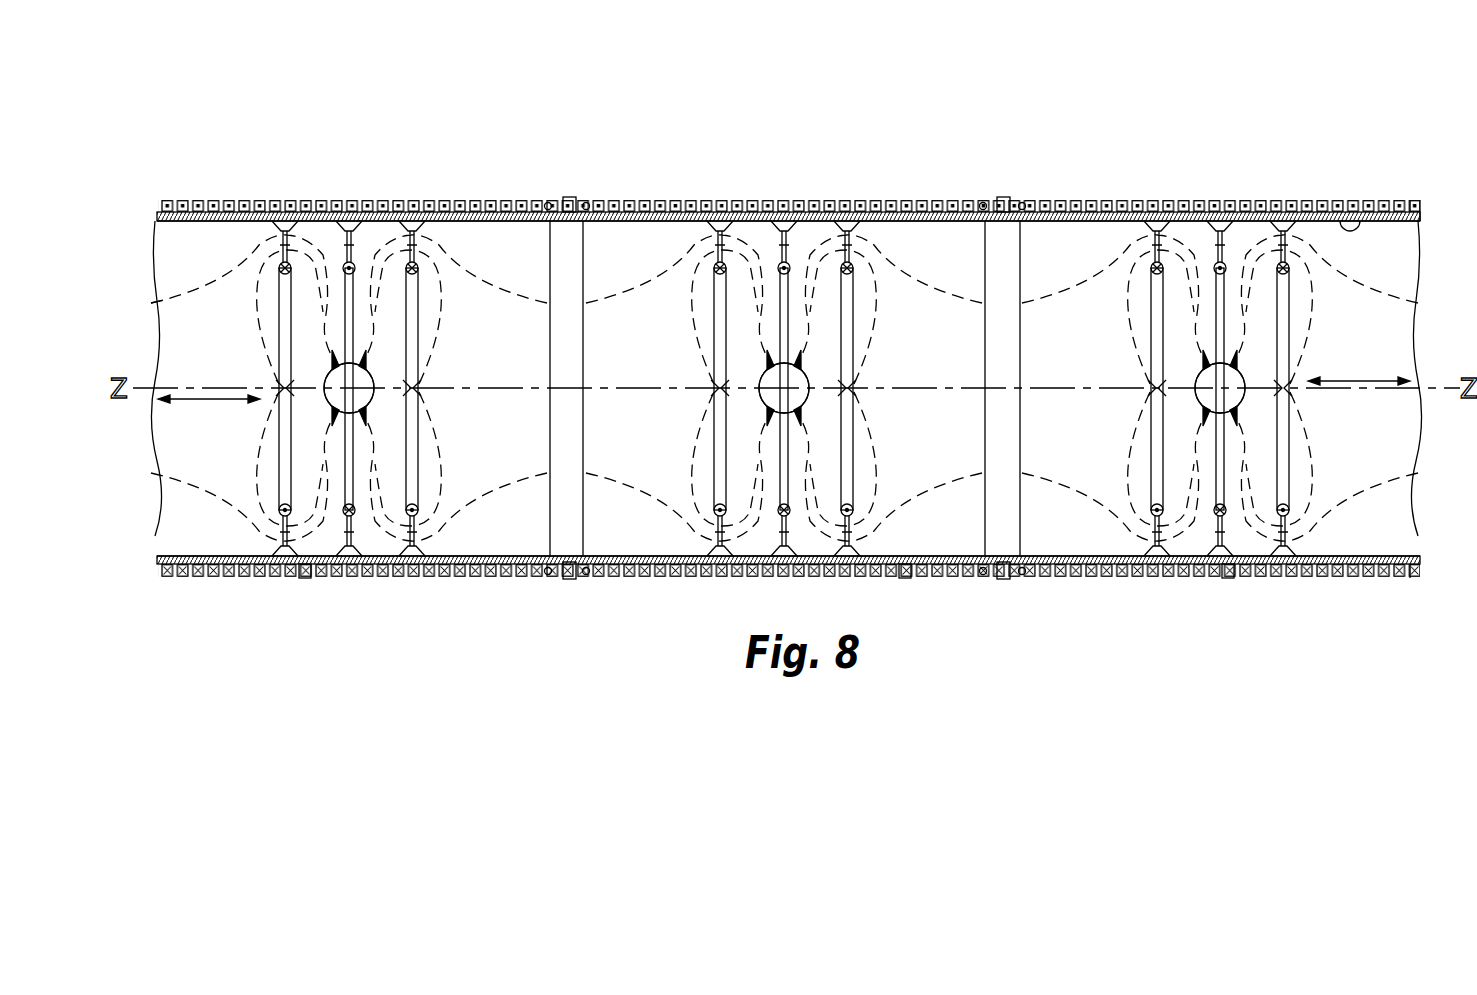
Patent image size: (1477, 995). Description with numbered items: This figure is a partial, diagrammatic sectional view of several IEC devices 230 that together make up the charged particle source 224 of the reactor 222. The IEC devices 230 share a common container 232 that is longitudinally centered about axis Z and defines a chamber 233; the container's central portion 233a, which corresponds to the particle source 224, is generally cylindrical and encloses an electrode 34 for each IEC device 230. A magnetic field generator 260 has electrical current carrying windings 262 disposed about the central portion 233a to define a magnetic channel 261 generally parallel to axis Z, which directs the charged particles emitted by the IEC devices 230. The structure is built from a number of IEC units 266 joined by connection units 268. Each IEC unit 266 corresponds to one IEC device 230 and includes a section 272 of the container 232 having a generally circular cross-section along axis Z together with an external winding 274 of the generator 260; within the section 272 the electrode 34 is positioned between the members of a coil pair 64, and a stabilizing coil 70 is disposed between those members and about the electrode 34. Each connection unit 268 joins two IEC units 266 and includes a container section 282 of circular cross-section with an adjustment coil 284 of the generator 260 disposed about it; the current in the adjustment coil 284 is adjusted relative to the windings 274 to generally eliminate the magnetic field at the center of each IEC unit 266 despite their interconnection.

The charged particle source 224 is at (1165, 90).
The external winding 274 is at (285, 199).
The electrical current carrying winding 262 is at (1157, 198).
The coil pair 64 is at (432, 468).
The electrode 34 is at (373, 408).
The stabilizing coil 70 is at (364, 296).
The section of container 282 is at (548, 330).
The adjustment coil 284 is at (549, 200).
The connection unit 268 is at (579, 194).
The magnetic field generator 260 is at (1052, 198).
The IEC device 230 is at (499, 230).
The section of container 272 is at (475, 555).
The IEC unit 266 is at (306, 584).
The reactor 222 is at (445, 580).
The magnetic channel 261 is at (220, 405).
The chamber 233 is at (1350, 220).
The central portion 233a is at (1400, 198).
The container 232 is at (1408, 580).